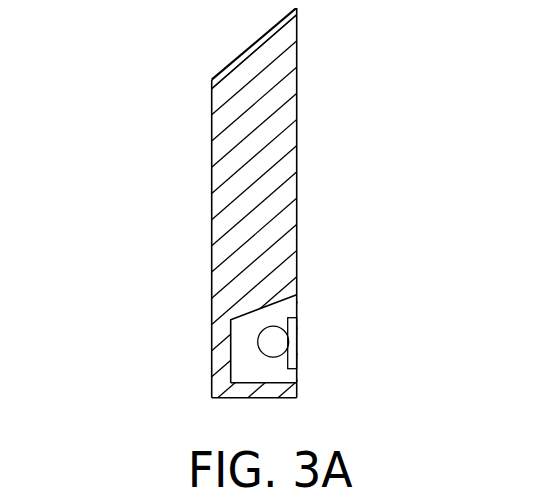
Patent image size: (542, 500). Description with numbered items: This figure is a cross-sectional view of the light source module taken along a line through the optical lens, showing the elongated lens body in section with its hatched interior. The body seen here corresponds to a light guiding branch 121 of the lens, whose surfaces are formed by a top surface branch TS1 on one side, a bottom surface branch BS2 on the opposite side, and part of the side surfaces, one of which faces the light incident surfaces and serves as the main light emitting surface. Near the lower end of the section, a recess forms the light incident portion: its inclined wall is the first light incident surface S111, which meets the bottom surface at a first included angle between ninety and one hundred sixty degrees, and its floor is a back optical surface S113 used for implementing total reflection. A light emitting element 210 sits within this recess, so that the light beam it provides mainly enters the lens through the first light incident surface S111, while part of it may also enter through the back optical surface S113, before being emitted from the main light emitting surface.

The first light guiding branch 121 is at (286, 57).
The bottom surface branch BS2 is at (299, 101).
The top surface branch TS1 is at (211, 178).
The first light incident surface S111 is at (262, 304).
The light emitting element 210 is at (281, 342).
The back optical surface S113 is at (272, 383).